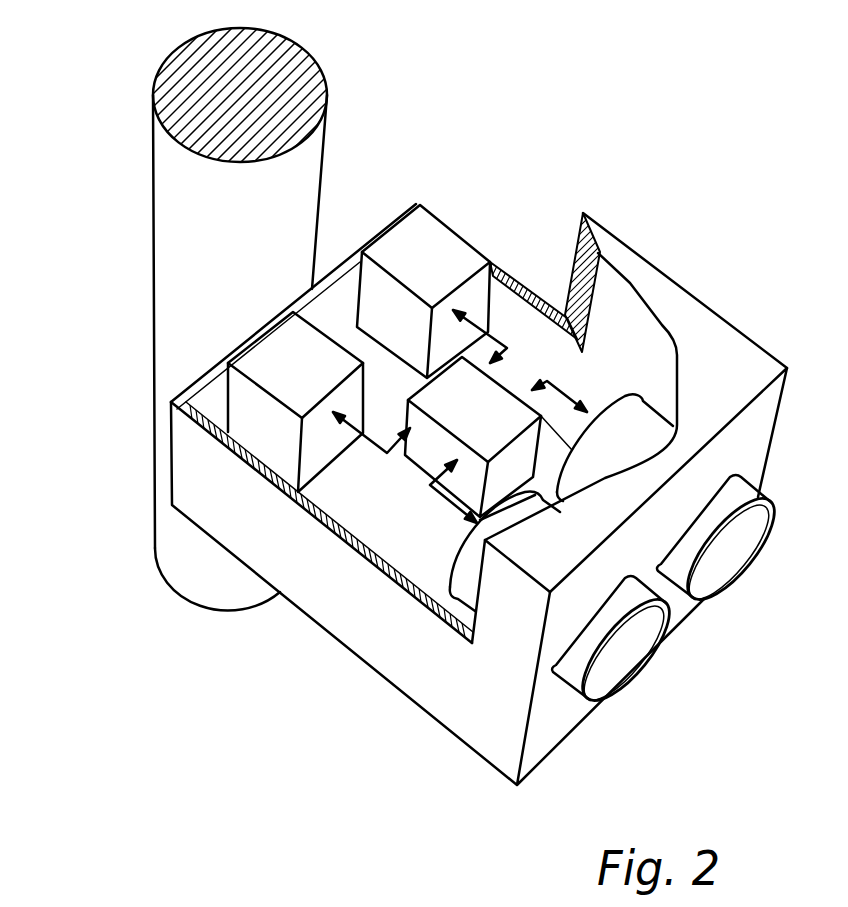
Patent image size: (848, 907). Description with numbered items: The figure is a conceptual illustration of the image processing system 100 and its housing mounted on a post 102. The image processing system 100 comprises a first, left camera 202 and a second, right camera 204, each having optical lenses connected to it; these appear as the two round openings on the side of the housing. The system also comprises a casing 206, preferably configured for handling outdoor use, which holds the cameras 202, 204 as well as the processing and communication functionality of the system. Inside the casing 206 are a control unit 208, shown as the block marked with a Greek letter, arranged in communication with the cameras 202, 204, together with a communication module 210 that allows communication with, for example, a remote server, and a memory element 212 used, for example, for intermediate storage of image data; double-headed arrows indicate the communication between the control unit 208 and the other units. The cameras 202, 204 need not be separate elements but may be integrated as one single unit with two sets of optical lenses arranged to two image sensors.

The image processing system 100 is at (705, 160).
The mounting post 102 is at (185, 282).
The first (left) camera 202 is at (722, 555).
The second (right) camera 204 is at (623, 653).
The casing 206 is at (760, 352).
The control unit 208 is at (498, 402).
The communication module 210 is at (305, 447).
The memory element 212 is at (440, 210).